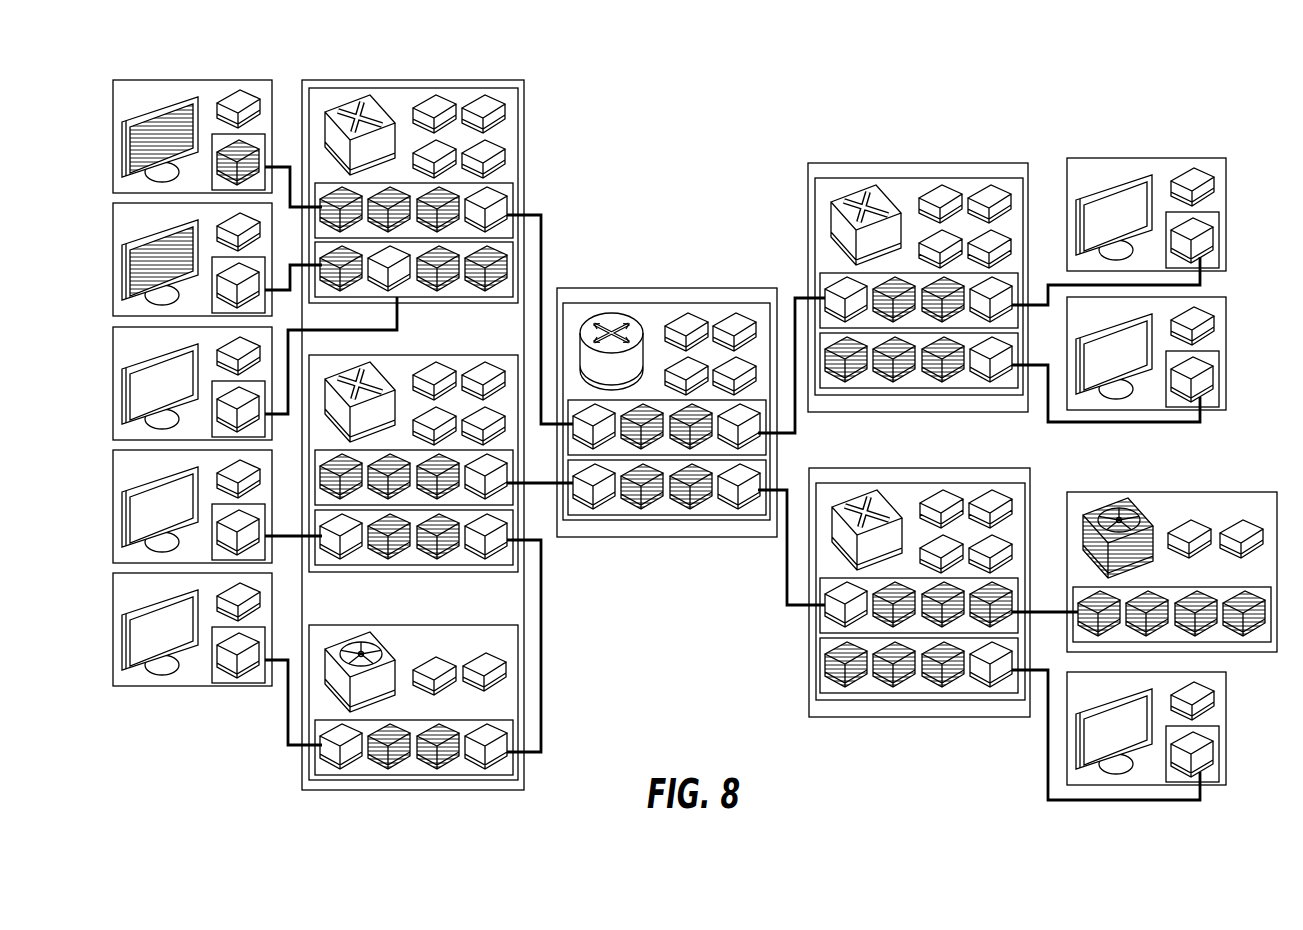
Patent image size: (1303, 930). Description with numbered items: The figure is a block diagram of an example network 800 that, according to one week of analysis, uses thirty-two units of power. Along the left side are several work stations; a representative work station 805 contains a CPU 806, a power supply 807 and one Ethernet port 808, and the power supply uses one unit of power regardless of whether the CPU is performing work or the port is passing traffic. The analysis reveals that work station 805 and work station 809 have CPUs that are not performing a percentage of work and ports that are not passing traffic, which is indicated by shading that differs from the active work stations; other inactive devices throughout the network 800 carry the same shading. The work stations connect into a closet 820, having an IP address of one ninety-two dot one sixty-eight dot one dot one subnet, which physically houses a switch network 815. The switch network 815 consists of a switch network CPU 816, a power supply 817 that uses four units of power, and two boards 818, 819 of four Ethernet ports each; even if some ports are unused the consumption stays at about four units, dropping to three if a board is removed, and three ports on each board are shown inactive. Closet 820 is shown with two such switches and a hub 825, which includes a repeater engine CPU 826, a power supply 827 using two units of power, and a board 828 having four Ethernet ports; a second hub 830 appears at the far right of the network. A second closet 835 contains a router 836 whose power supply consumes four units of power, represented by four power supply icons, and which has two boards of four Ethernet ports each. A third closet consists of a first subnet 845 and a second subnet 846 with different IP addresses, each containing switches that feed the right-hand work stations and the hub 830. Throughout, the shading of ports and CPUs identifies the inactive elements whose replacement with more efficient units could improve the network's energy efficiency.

The network 800 is at (1195, 73).
The work station 805 is at (113, 138).
The CPU 806 is at (168, 104).
The power supply 807 is at (243, 98).
The Ethernet port 808 is at (245, 147).
The work station 809 is at (113, 262).
The switch network 815 is at (519, 137).
The switch network CPU 816 is at (335, 110).
The power supply 817 is at (490, 112).
The board of four Ethernet ports 818 is at (495, 200).
The board of four Ethernet ports 819 is at (500, 262).
The closet 820 is at (488, 80).
The hub 825 is at (415, 625).
The repeater engine CPU 826 is at (335, 648).
The power supply 827 is at (490, 668).
The board 828 is at (495, 740).
The hub 830 is at (1173, 492).
The second closet 835 is at (725, 288).
The router 836 is at (630, 303).
The first subnet 845 is at (997, 163).
The second subnet 846 is at (997, 468).